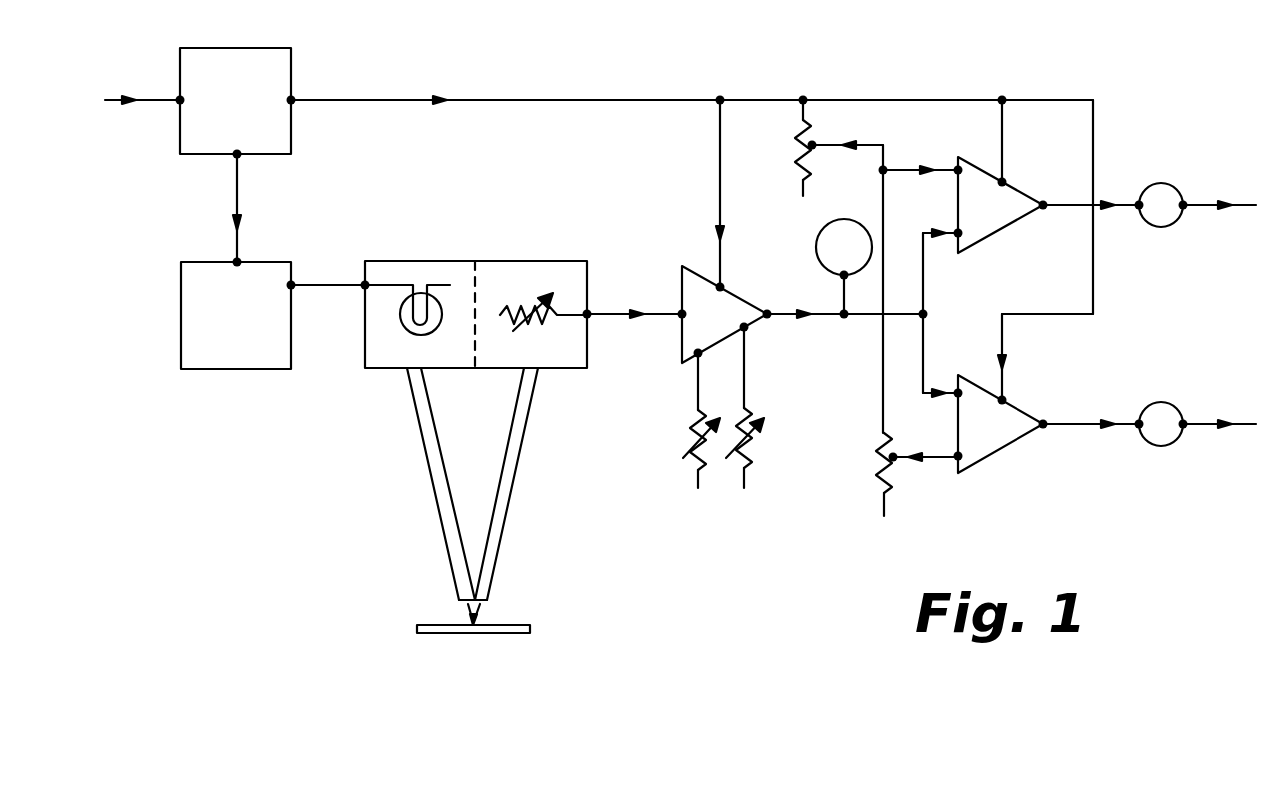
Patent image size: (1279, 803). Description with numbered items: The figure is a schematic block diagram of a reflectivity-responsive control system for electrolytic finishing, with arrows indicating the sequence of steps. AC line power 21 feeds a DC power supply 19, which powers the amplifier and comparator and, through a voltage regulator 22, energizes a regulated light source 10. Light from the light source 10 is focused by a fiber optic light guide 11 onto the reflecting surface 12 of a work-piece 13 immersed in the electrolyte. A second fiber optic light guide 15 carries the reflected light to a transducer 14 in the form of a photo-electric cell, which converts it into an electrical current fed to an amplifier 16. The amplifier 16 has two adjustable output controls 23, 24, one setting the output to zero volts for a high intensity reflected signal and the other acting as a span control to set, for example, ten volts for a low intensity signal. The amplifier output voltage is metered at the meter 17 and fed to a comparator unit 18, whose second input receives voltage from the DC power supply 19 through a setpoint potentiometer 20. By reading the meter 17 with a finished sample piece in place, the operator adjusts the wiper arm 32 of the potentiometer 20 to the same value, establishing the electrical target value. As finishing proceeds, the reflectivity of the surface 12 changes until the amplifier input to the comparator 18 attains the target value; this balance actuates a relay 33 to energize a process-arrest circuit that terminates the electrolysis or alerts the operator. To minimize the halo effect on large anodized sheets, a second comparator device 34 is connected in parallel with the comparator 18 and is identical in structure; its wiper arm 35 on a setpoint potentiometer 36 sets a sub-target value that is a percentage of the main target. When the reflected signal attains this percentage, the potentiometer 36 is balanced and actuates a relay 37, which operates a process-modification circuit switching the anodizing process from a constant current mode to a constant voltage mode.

The regulated light source 10 is at (407, 273).
The fiber optic light guide 11 is at (432, 469).
The reflecting surface 12 is at (430, 622).
The work-piece 13 is at (513, 630).
The transducer 14 is at (528, 285).
The second fiber optic light guide 15 is at (512, 467).
The amplifier 16 is at (688, 337).
The meter 17 is at (828, 238).
The comparator unit 18 is at (1012, 202).
The DC power supply 19 is at (275, 73).
The setpoint potentiometer 20 is at (797, 130).
The AC line power 21 is at (152, 98).
The voltage regulator 22 is at (241, 357).
The adjustable output control 23 is at (695, 467).
The adjustable output control 24 is at (753, 455).
The wiper arm 32 is at (820, 142).
The relay 33 is at (1162, 195).
The second comparator device 34 is at (1008, 435).
The wiper arm 35 is at (927, 463).
The setpoint potentiometer 36 is at (877, 448).
The relay 37 is at (1158, 412).